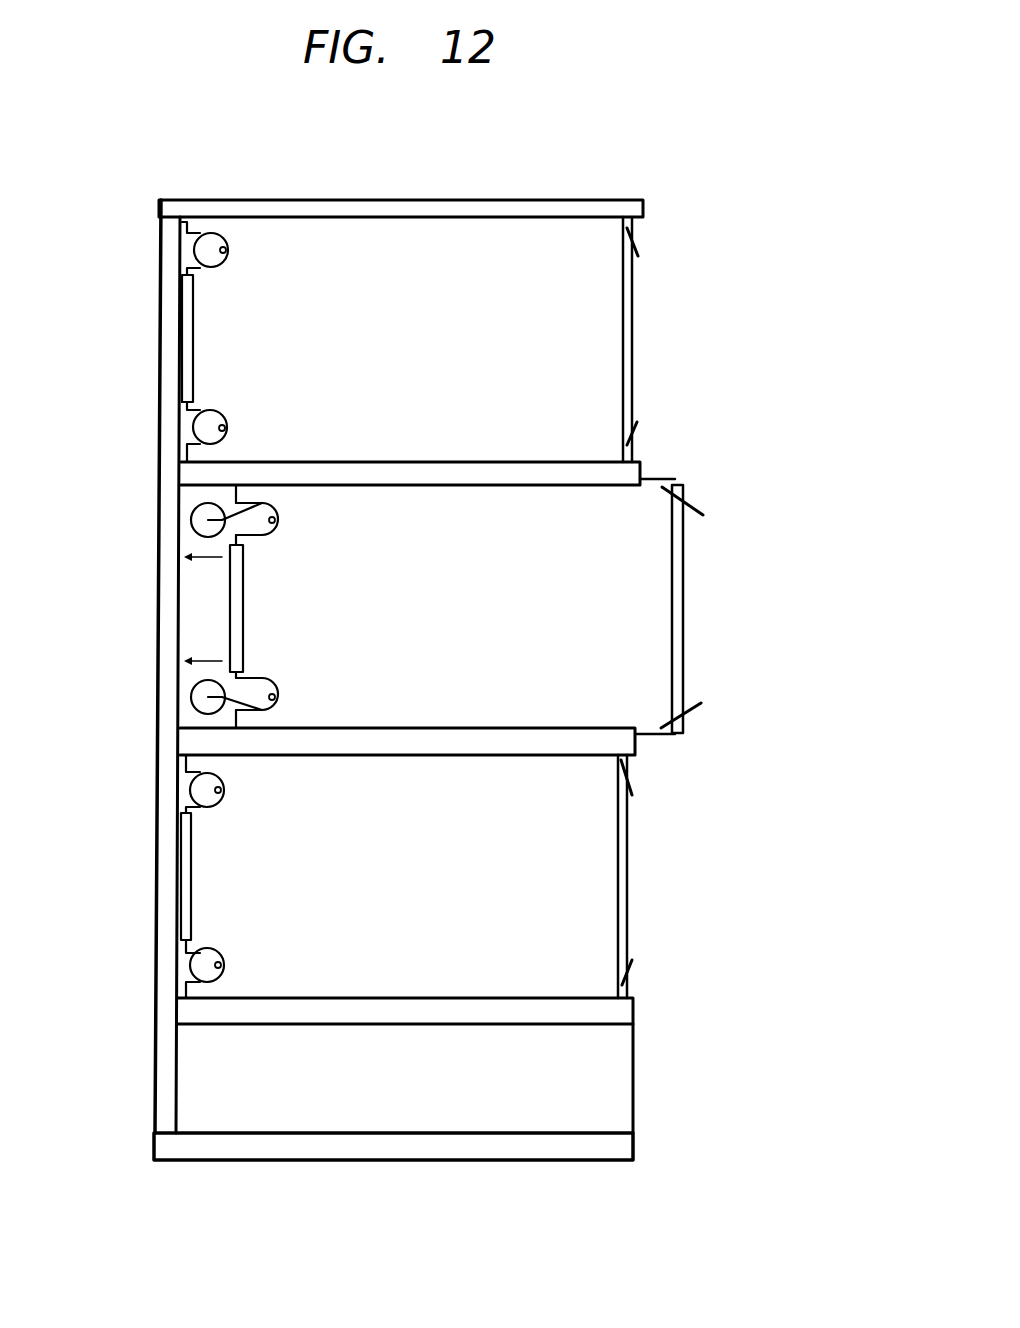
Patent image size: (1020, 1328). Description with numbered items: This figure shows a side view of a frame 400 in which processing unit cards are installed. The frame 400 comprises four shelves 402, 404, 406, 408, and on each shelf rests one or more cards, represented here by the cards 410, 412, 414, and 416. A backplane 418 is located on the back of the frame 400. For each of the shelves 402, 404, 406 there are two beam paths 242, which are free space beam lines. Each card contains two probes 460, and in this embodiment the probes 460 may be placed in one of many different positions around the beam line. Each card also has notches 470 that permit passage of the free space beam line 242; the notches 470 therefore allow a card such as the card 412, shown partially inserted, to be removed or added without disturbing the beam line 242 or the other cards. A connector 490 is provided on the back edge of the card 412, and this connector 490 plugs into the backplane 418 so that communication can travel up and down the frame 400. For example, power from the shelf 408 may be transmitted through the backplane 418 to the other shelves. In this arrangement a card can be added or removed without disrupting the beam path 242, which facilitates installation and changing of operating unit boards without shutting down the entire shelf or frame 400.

The frame 400 is at (587, 184).
The shelf 402 is at (642, 473).
The shelf 404 is at (634, 742).
The shelf 406 is at (630, 1012).
The shelf 408 is at (630, 1150).
The card 410 is at (423, 351).
The card 412 is at (472, 620).
The card 414 is at (419, 891).
The card 416 is at (424, 1092).
The backplane 418 is at (162, 603).
The beam path 242 is at (232, 250).
The probe 460 is at (228, 252).
The notch 470 is at (200, 268).
The connector 490 is at (244, 605).